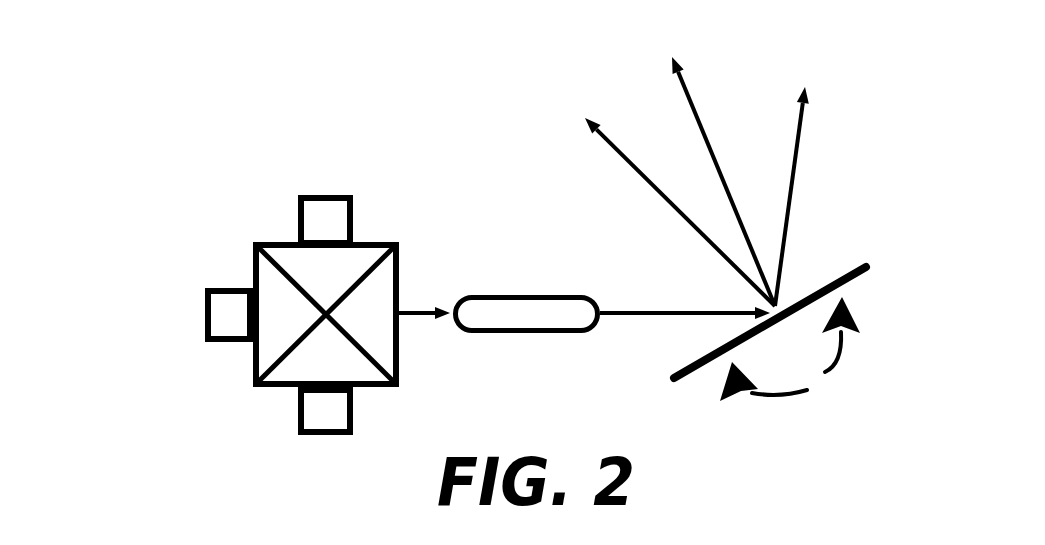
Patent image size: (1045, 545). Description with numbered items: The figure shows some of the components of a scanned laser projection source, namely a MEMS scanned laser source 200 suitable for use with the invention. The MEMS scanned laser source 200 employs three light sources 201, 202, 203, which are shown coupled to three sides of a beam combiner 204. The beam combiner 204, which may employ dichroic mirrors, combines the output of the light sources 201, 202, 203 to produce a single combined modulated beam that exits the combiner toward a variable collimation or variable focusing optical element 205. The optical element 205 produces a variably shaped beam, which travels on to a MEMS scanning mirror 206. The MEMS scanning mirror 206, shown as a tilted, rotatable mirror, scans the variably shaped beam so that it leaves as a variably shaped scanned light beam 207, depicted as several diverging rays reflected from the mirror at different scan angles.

The MEMS scanned laser source 200 is at (109, 248).
The light source 201 is at (325, 220).
The light source 202 is at (222, 315).
The light source 203 is at (325, 408).
The beam combiner 204 is at (399, 278).
The variable collimation or variable focusing optical element 205 is at (498, 313).
The MEMS scanning mirror 206 is at (818, 297).
The variably shaped scanned light beam 207 is at (796, 158).